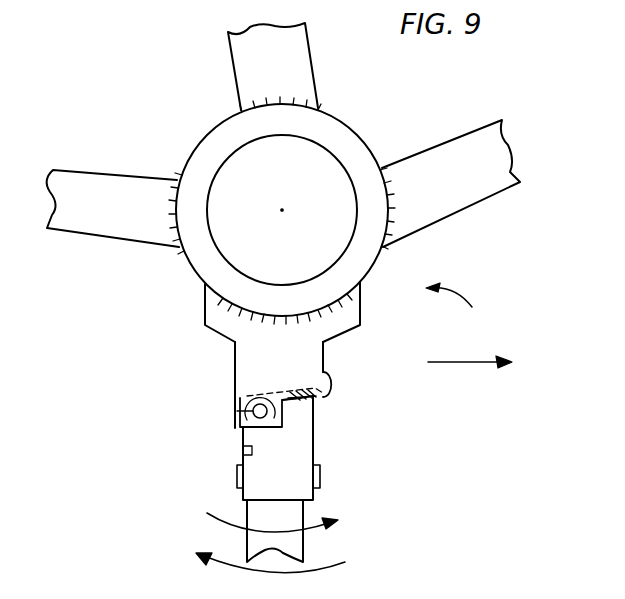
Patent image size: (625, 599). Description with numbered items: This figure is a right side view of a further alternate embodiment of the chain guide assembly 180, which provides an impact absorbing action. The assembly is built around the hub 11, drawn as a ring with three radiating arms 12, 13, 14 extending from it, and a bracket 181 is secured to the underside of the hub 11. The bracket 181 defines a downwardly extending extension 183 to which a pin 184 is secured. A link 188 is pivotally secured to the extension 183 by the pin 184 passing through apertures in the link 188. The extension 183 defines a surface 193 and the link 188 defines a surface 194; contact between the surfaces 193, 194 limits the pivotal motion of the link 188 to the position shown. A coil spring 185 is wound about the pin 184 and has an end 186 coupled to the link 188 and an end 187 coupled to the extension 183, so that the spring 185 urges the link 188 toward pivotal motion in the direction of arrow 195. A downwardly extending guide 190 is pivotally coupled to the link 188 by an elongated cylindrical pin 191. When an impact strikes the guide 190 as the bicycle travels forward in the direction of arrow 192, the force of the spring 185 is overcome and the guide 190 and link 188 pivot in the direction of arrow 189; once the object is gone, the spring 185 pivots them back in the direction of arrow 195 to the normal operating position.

The hub 11 is at (355, 257).
The arm 12 is at (478, 183).
The arm 13 is at (310, 66).
The arm 14 is at (108, 188).
The chain guide assembly 180 is at (468, 304).
The bracket 181 is at (343, 323).
The extension 183 is at (252, 375).
The pin 184 is at (240, 418).
The coil spring 185 is at (238, 450).
The end 186 is at (237, 457).
The end 187 is at (330, 380).
The link 188 is at (307, 432).
The arrow 189 is at (227, 558).
The guide 190 is at (303, 513).
The elongated cylindrical pin 191 is at (320, 478).
The arrow 192 is at (473, 362).
The surface 193 is at (307, 412).
The surface 194 is at (298, 403).
The arrow 195 is at (210, 531).